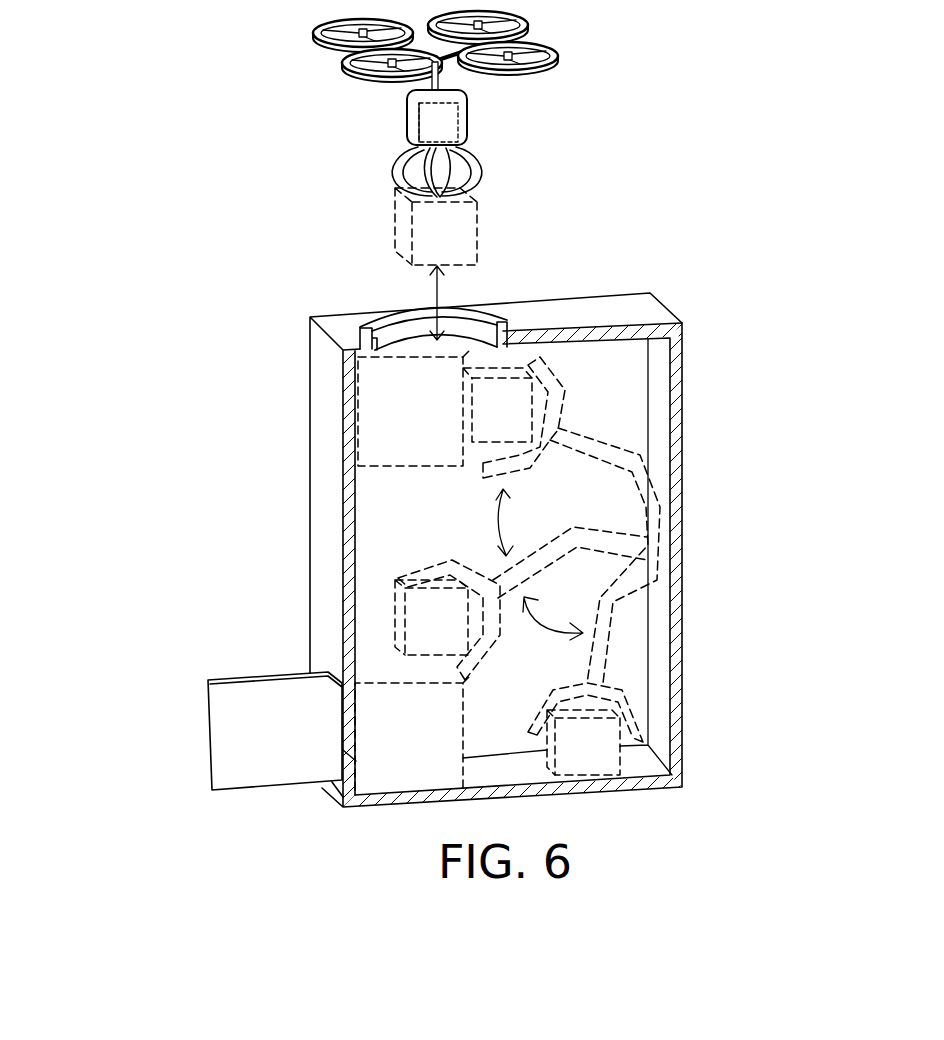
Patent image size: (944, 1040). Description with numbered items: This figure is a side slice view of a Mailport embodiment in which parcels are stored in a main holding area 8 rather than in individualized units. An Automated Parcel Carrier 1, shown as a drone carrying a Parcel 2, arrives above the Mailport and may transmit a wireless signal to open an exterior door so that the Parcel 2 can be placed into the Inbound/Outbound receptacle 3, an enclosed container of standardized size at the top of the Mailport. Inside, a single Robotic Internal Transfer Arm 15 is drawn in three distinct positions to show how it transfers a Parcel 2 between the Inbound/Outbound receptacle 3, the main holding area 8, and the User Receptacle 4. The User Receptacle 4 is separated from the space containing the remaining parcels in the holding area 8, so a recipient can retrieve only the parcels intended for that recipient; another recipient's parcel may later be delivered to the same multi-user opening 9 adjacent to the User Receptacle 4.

The Automated Parcel Carrier 1 is at (307, 60).
The Parcel 2 is at (507, 481).
The Inbound/Outbound receptacle 3 is at (413, 408).
The User Receptacle 4 is at (412, 733).
The main holding area 8 is at (520, 680).
The multi-user opening 9 is at (355, 765).
The Robotic Internal Transfer Arm 15 is at (577, 440).